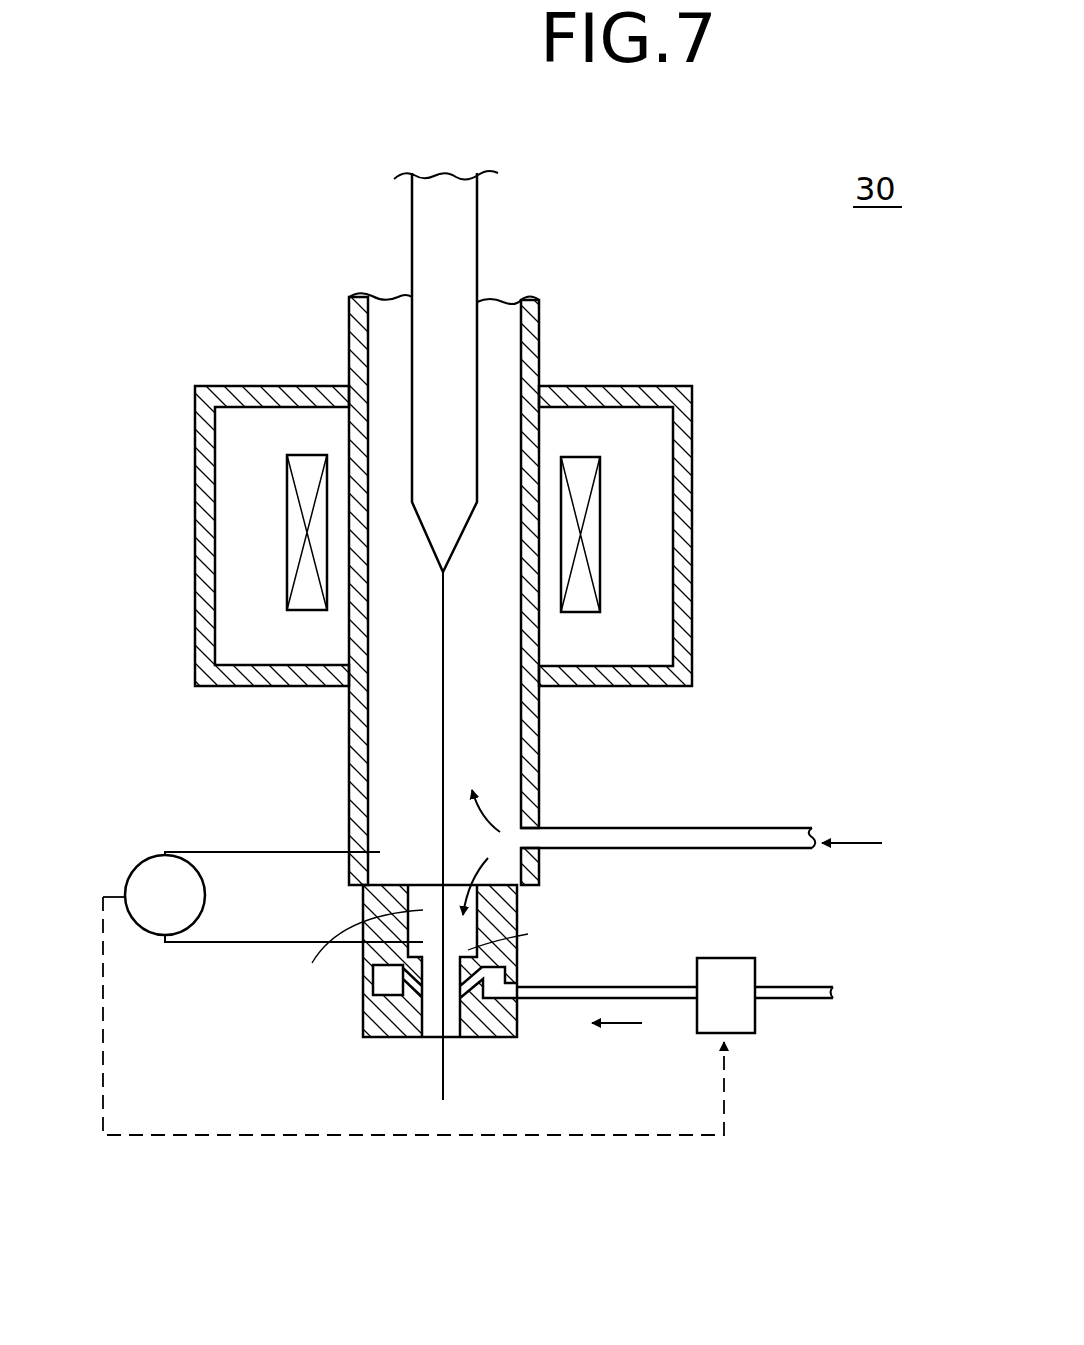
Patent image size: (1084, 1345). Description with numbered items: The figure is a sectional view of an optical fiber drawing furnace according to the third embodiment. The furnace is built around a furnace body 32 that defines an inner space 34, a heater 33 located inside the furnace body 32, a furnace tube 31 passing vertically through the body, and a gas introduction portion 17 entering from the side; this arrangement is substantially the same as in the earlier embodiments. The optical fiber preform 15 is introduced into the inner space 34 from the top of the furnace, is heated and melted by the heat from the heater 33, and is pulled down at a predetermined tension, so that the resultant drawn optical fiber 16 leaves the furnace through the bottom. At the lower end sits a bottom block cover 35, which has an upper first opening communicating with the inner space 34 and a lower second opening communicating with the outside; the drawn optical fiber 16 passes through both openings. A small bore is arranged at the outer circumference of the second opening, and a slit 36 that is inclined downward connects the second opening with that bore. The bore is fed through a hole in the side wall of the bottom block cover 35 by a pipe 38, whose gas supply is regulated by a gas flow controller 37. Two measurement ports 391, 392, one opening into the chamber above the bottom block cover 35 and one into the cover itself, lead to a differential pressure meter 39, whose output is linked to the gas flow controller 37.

The optical fiber preform 15 is at (460, 232).
The drawn optical fiber 16 is at (446, 1082).
The gas introduction portion 17 is at (628, 836).
The furnace tube 31 is at (535, 432).
The furnace body 32 is at (692, 634).
The heater 33 is at (600, 528).
The inner space 34 is at (497, 718).
The bottom block cover 35 is at (530, 912).
The slit 36 is at (372, 1040).
The gas flow controller 37 is at (738, 958).
The pipe 38 is at (578, 986).
The differential pressure meter 39 is at (150, 856).
The measurement port 391 is at (268, 850).
The measurement port 392 is at (262, 940).